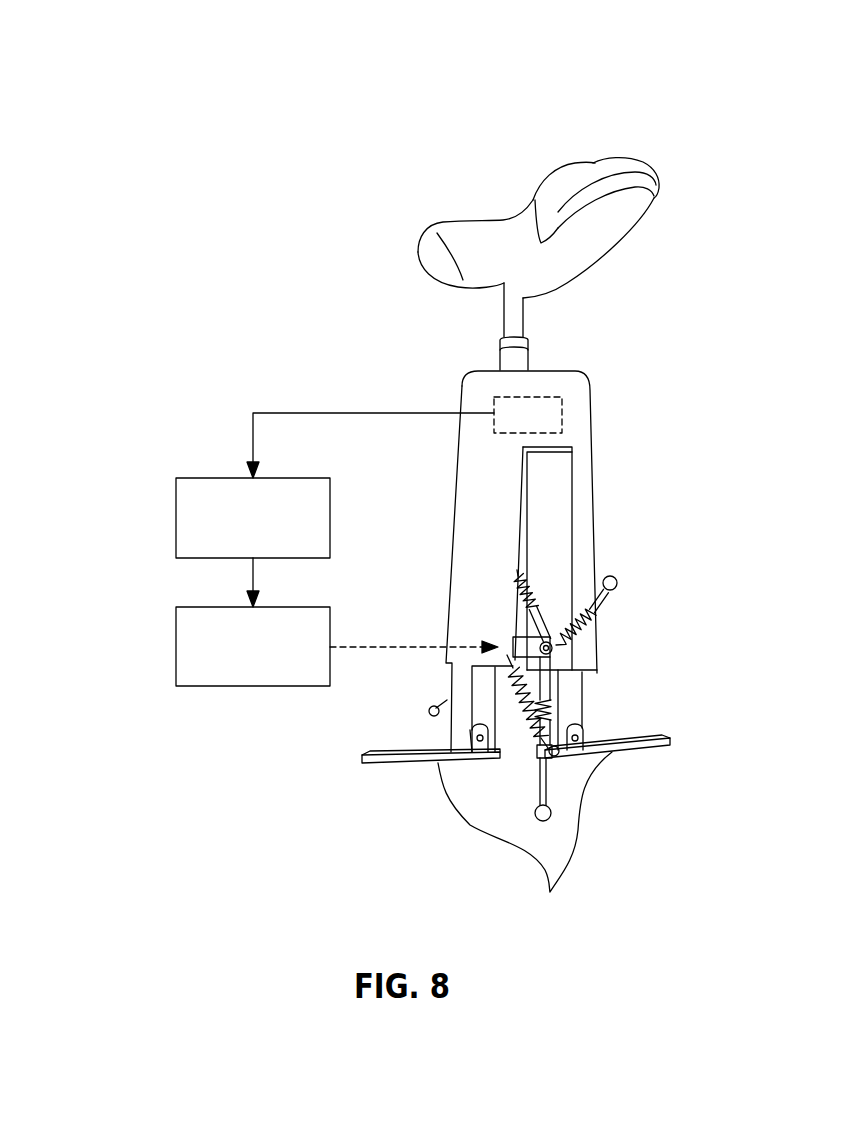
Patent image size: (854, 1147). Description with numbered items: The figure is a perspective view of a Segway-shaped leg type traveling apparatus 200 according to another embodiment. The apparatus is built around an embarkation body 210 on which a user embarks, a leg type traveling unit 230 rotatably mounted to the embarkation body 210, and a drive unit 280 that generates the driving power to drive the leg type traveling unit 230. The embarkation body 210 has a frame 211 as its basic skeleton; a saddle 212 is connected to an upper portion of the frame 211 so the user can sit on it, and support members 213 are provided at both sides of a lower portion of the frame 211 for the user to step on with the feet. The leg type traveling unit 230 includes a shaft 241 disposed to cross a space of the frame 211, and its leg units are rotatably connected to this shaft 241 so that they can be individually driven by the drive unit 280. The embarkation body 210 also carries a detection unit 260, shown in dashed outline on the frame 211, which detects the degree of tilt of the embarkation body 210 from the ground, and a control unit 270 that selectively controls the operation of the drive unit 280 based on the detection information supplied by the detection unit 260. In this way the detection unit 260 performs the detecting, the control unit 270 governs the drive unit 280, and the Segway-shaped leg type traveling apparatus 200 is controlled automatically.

The Segway-shaped leg type traveling apparatus 200 is at (451, 50).
The embarkation body 210 is at (603, 454).
The frame 211 is at (453, 523).
The saddle 212 is at (418, 252).
The support members 213 is at (516, 825).
The leg type traveling unit 230 is at (537, 596).
The shaft 241 is at (553, 648).
The detection unit 260 is at (563, 412).
The control unit 270 is at (176, 518).
The drive unit 280 is at (176, 645).